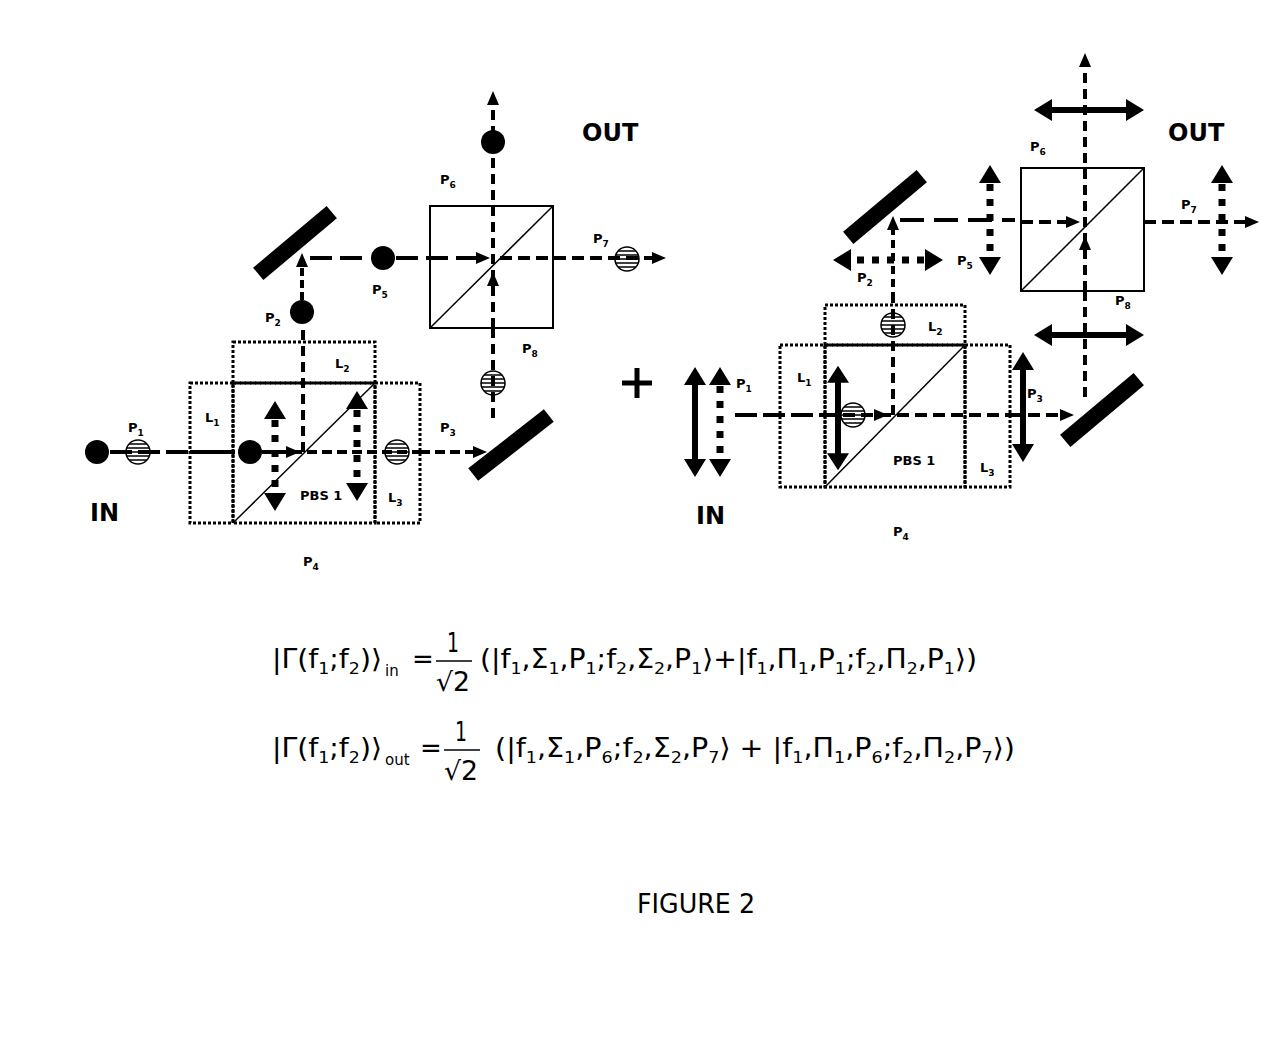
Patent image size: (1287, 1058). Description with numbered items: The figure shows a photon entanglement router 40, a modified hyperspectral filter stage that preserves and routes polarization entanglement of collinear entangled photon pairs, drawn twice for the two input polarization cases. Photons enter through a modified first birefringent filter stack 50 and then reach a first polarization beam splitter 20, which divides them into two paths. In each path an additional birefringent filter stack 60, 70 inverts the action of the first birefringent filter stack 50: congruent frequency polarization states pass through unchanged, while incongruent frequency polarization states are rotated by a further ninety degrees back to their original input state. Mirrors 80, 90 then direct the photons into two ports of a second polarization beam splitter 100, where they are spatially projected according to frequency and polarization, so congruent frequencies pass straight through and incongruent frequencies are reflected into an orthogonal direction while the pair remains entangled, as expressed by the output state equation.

The first polarization beam splitter 20 is at (284, 532).
The photon entanglement router 40 is at (232, 126).
The birefringent filter stack L1 50 is at (192, 528).
The birefringent filter stack L2 60 is at (230, 351).
The birefringent filter stack L3 70 is at (430, 506).
The mirror 80 is at (559, 434).
The mirror 90 is at (250, 267).
The second polarization beam splitter 100 is at (564, 290).